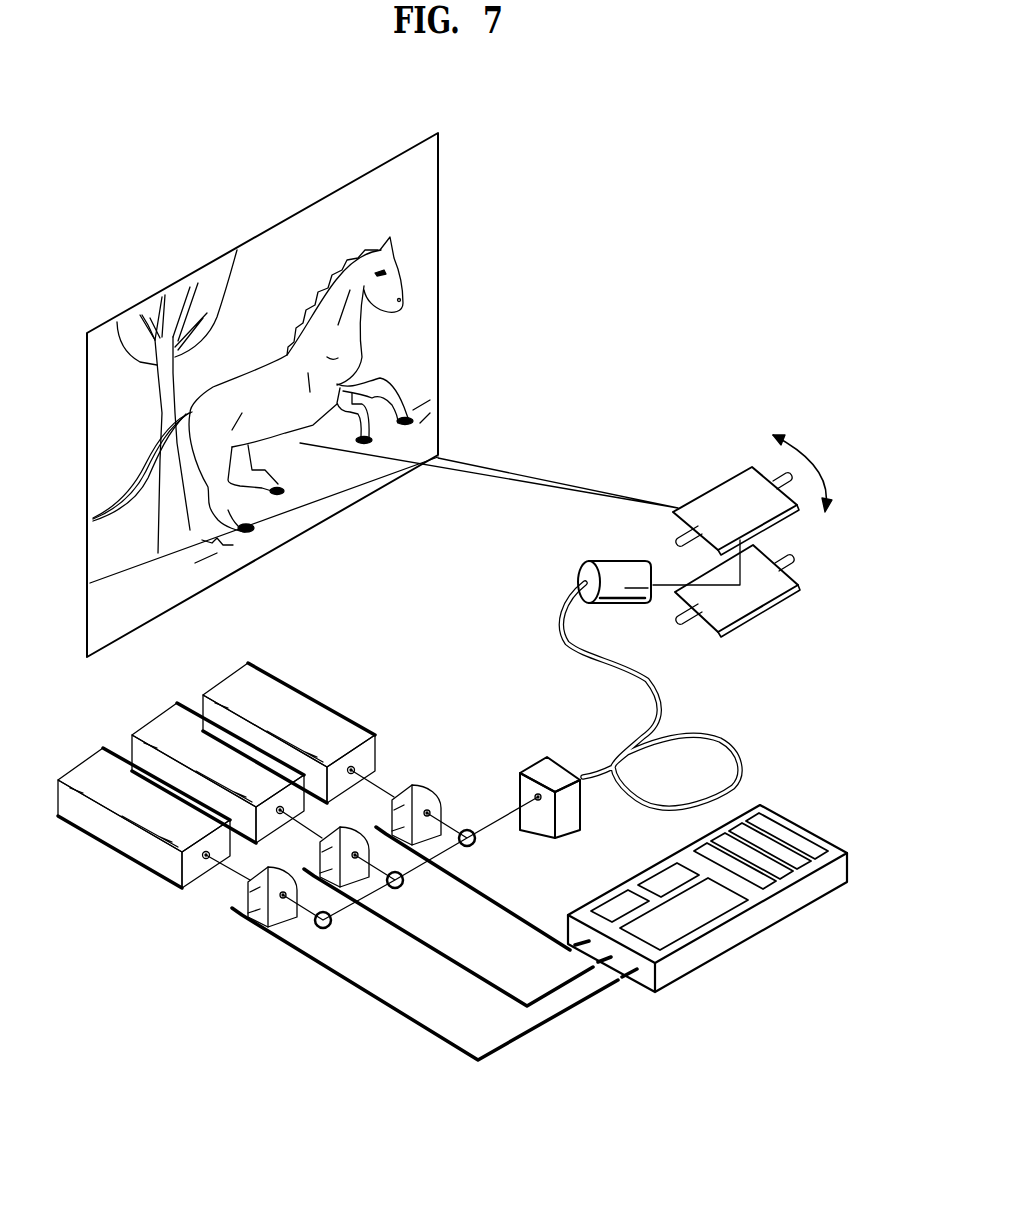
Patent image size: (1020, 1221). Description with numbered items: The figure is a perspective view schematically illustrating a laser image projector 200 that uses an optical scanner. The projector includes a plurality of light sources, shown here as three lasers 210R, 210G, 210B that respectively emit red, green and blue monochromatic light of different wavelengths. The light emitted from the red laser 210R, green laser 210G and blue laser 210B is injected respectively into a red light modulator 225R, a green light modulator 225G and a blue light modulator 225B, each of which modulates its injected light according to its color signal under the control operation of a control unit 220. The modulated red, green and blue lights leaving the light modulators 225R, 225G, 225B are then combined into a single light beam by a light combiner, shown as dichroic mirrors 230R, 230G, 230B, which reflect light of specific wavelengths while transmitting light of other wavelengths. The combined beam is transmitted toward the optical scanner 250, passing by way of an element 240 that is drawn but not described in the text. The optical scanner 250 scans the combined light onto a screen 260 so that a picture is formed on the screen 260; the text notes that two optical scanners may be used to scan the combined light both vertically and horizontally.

The laser image projector 200 is at (598, 1088).
The red laser 210R is at (92, 773).
The green laser 210G is at (163, 733).
The blue laser 210B is at (237, 692).
The control unit 220 is at (787, 912).
The red light modulator 225R is at (250, 890).
The green light modulator 225G is at (320, 874).
The blue light modulator 225B is at (428, 800).
The dichroic mirror 230R is at (322, 928).
The dichroic mirror 230G is at (393, 889).
The dichroic mirror 230B is at (463, 846).
The optical fiber coupler 240 is at (740, 753).
The optical scanner 250 is at (750, 598).
The screen 260 is at (427, 338).